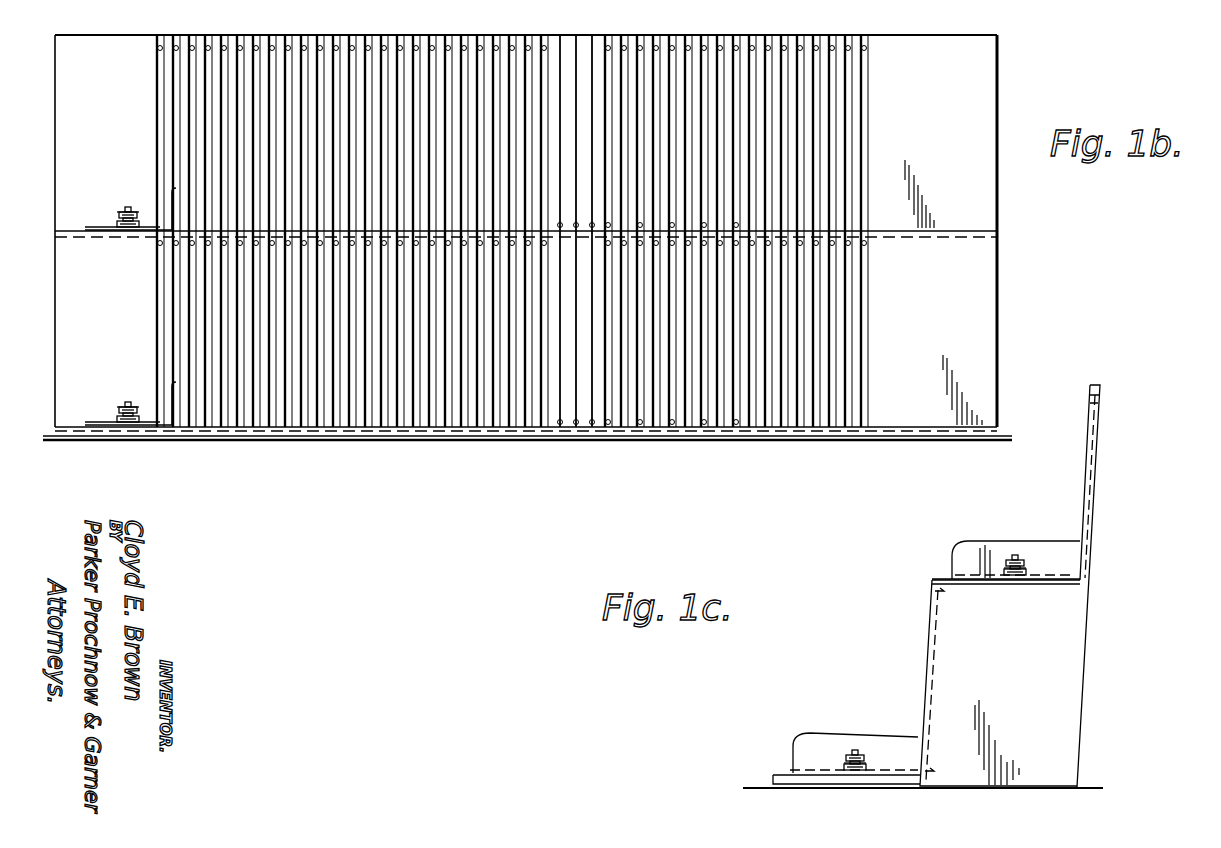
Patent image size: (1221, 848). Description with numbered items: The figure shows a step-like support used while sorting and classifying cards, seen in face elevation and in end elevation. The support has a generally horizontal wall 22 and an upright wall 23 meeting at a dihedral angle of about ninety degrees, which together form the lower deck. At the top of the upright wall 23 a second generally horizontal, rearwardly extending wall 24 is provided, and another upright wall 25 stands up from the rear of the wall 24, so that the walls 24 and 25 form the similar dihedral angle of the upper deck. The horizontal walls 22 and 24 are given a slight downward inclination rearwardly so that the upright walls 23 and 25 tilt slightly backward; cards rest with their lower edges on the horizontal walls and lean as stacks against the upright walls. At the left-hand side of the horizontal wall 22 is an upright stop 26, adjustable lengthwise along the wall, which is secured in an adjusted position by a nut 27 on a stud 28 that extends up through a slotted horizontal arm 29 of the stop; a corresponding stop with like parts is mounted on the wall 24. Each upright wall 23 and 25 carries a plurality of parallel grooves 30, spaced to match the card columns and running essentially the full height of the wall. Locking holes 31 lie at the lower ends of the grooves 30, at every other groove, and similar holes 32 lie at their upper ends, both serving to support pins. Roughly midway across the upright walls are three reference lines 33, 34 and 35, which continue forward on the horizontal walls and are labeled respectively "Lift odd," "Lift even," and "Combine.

In FIG. 1B, the horizontal wall 22 is at (418, 428).
In FIG. 1C, the horizontal wall 22 is at (773, 775).
In FIG. 1B, the upright wall 23 is at (990, 318).
In FIG. 1C, the upright wall 23 is at (930, 625).
In FIG. 1B, the horizontal wall 24 is at (985, 231).
In FIG. 1C, the horizontal wall 24 is at (935, 580).
In FIG. 1B, the upright wall 25 is at (985, 90).
In FIG. 1C, the upright wall 25 is at (1086, 462).
In FIG. 1B, the upright stop 26 is at (172, 200).
In FIG. 1C, the upright stop 26 is at (990, 545).
In FIG. 1B, the nut 27 is at (117, 212).
In FIG. 1C, the nut 27 is at (1028, 565).
In FIG. 1B, the stud 28 is at (128, 207).
In FIG. 1C, the stud 28 is at (1018, 556).
In FIG. 1B, the horizontal arm 29 is at (90, 227).
In FIG. 1B, the parallel grooves 30 is at (852, 148).
In FIG. 1B, the locking holes 31 is at (608, 425).
In FIG. 1B, the holes 32 is at (872, 48).
In FIG. 1B, the reference line 33 is at (559, 35).
In FIG. 1B, the reference line 34 is at (577, 45).
In FIG. 1B, the reference line 35 is at (596, 47).